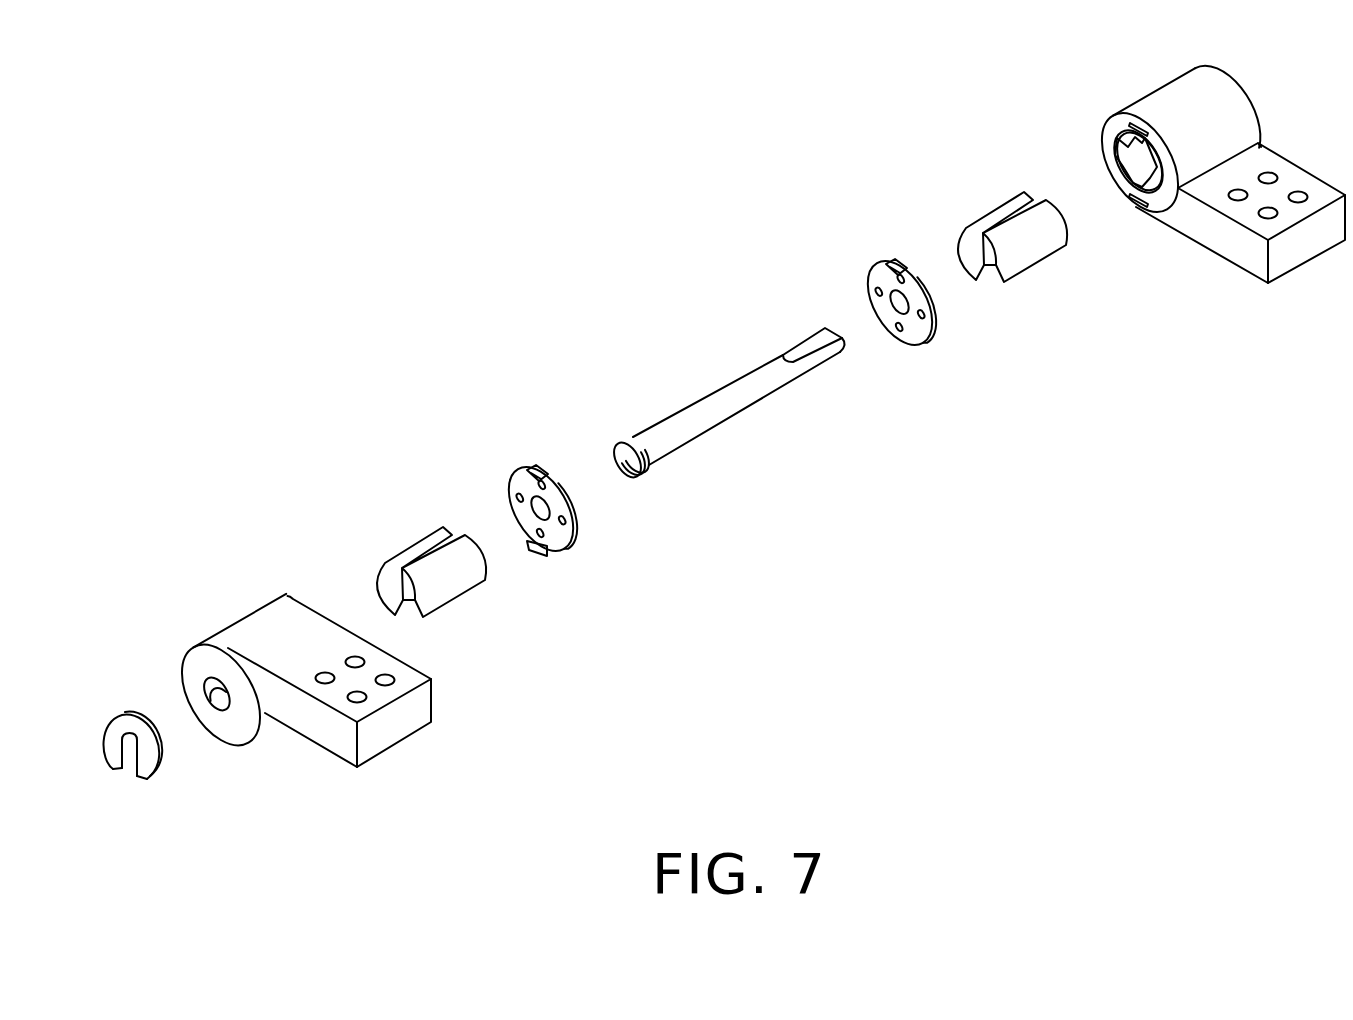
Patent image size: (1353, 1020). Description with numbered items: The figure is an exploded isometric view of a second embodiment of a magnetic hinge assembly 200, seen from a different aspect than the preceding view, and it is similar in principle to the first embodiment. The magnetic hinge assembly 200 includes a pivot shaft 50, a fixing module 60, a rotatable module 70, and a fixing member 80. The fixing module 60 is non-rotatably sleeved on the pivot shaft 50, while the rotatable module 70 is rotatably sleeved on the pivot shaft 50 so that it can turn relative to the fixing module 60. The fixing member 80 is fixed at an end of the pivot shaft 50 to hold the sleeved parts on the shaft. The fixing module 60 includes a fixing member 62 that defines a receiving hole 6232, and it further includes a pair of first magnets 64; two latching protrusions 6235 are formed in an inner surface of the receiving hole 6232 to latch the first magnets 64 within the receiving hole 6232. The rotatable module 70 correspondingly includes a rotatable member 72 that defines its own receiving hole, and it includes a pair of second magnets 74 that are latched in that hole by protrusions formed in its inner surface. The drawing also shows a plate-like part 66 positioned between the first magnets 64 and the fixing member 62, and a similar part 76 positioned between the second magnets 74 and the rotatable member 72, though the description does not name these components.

The magnetic hinge assembly 200 is at (404, 228).
The pivot shaft 50 is at (728, 405).
The fixing module 60 is at (1045, 44).
The fixing member 62 is at (1132, 88).
The receiving hole 6232 is at (1128, 166).
The latching protrusions 6235 is at (1145, 178).
The first magnets 64 is at (990, 167).
The second washer 66 is at (865, 243).
The rotatable module 70 is at (405, 414).
The rotatable member 72 is at (224, 613).
The second magnets 74 is at (350, 537).
The first washer 76 is at (492, 460).
The fixing member 80 is at (125, 733).